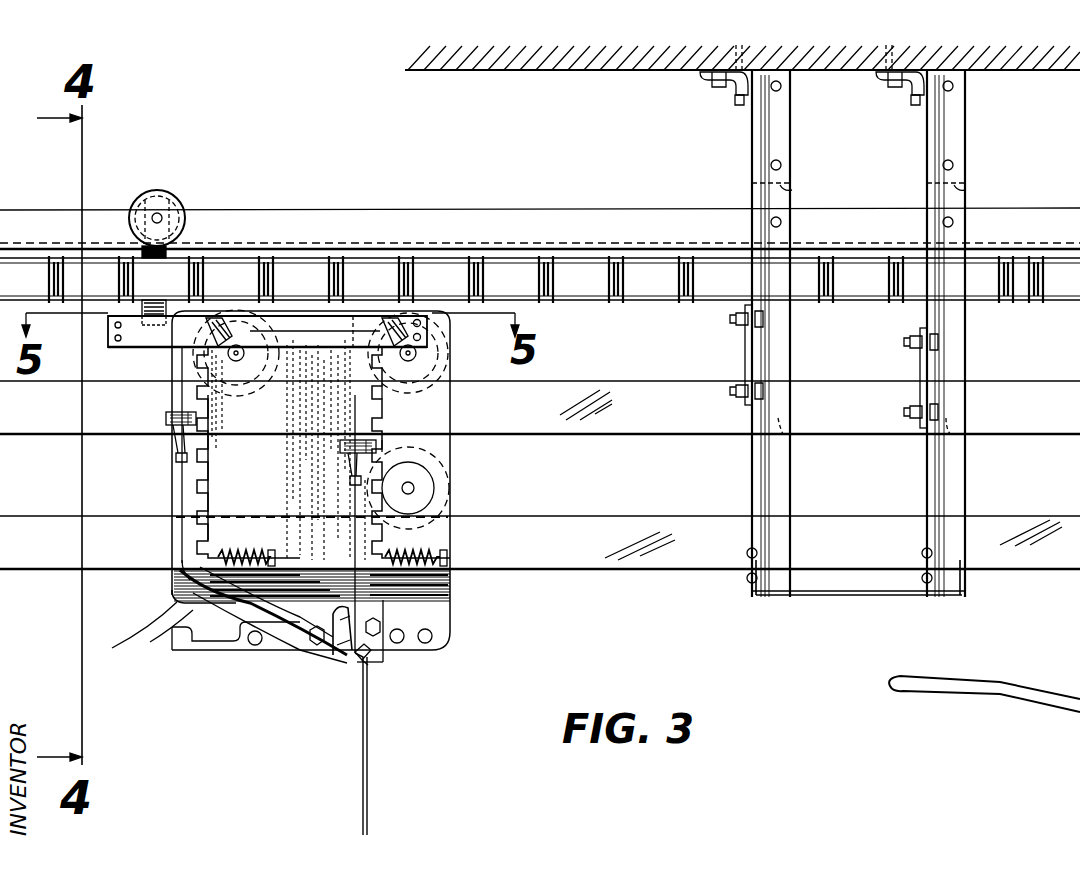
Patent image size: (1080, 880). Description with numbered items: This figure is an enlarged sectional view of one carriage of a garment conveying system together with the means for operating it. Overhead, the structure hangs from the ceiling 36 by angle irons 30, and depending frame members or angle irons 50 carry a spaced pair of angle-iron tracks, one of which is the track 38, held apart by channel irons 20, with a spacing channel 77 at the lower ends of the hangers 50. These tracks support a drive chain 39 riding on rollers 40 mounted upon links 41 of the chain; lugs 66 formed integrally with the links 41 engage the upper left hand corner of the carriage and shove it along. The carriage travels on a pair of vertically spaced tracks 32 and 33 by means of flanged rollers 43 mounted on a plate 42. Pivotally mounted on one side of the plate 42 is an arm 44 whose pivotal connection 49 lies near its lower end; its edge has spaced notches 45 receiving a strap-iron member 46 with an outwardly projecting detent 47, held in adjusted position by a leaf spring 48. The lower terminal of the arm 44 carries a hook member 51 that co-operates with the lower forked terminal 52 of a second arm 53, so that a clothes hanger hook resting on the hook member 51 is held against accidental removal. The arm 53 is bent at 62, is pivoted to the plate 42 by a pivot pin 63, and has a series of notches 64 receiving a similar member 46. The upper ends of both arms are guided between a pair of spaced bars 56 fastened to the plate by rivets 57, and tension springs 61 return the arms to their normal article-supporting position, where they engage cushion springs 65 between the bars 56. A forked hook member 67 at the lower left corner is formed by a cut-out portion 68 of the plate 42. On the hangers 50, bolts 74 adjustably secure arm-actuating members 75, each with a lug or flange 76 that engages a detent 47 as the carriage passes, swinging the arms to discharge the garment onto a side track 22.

The channel irons 20 is at (792, 188).
The branch or side tracks 22 is at (1005, 690).
The angle irons 30 is at (712, 82).
The track 32 is at (622, 432).
The track 33 is at (636, 571).
The ceiling 36 is at (608, 72).
The track 38 is at (500, 208).
The drive chain 39 is at (320, 270).
The rollers 40 is at (165, 190).
The links 41 is at (170, 246).
The plate 42 is at (430, 606).
The anti-friction flanged wheels or rollers 43 is at (200, 366).
The arm 44 is at (360, 544).
The notches 45 is at (375, 392).
The member 46 is at (166, 418).
The lug or detent 47 is at (384, 446).
The leaf spring 48 is at (176, 445).
The pivotal connection 49 is at (386, 652).
The depending frame members or angle irons 50 is at (772, 143).
The hook member 51 is at (352, 662).
The lower forked terminal 52 is at (365, 668).
The arm 53 is at (190, 538).
The spaced bars 56 is at (288, 330).
The rivets 57 is at (114, 335).
The tension spring 61 is at (264, 536).
The bend 62 is at (139, 637).
The pivot pin 63 is at (300, 653).
The notches 64 is at (210, 470).
The cushion springs 65 is at (220, 328).
The lugs 66 is at (154, 300).
The hook member 67 is at (198, 652).
The cut-out portion 68 is at (165, 641).
The bolts 74 is at (730, 319).
The arm-actuating members 75 is at (745, 348).
The lug or flange 76 is at (783, 436).
The spacing channel 77 is at (838, 598).